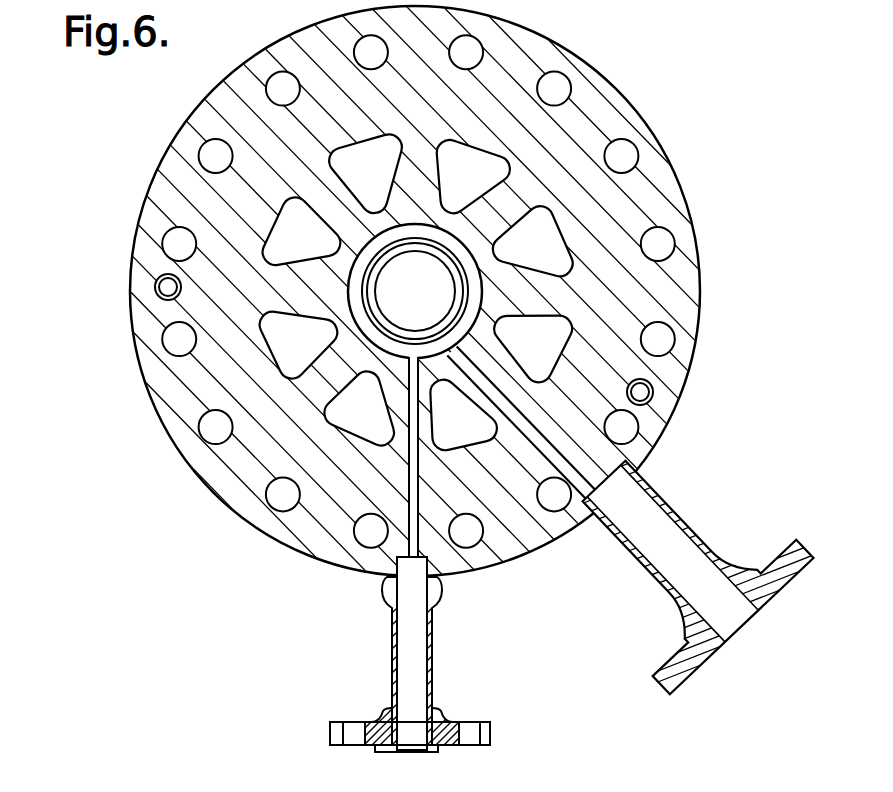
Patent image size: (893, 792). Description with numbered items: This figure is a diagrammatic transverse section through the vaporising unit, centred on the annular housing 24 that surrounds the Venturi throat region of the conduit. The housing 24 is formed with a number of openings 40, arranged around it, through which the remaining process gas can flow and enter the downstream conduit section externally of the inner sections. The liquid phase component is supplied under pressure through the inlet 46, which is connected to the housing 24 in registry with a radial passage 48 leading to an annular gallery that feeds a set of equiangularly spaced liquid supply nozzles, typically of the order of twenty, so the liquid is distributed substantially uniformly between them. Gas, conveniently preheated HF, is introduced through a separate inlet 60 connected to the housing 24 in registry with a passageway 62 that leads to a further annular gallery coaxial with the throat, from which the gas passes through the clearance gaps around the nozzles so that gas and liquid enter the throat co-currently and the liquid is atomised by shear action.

The annular housing 24 is at (190, 516).
The openings 40 is at (365, 153).
The inlet 46 is at (393, 671).
The radial passage 48 is at (405, 491).
The inlet 60 is at (674, 512).
The passageway 62 is at (538, 415).